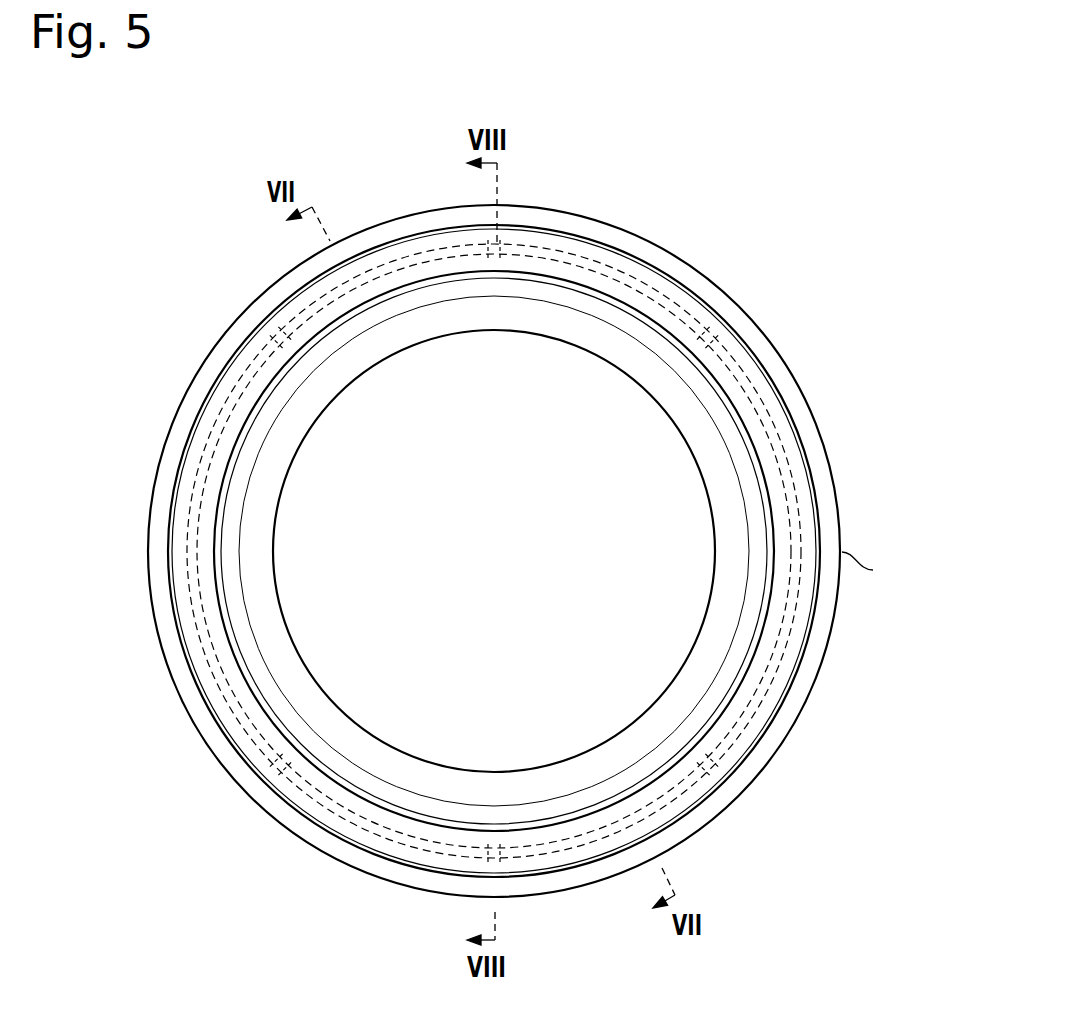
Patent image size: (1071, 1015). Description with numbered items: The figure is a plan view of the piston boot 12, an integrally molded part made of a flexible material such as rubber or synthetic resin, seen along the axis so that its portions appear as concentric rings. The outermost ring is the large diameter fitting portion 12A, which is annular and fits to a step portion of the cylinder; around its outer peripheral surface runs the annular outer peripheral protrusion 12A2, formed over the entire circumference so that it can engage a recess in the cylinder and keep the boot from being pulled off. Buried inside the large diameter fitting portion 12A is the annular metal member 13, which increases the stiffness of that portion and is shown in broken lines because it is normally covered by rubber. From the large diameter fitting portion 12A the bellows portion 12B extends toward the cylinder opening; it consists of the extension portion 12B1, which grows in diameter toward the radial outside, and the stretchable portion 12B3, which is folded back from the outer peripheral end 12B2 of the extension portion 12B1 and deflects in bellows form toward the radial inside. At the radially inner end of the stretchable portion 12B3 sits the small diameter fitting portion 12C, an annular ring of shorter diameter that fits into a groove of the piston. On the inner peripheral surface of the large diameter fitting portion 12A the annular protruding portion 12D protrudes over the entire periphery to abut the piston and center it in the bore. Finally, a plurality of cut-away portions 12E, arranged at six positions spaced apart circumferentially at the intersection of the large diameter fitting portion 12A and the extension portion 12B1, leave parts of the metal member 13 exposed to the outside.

The piston boot 12 is at (808, 713).
The large diameter fitting portion 12A is at (630, 270).
The outer peripheral protrusion 12A2 is at (773, 387).
The bellows portion 12B is at (190, 412).
The extension portion 12B1 is at (193, 695).
The outer peripheral end 12B2 is at (892, 568).
The stretchable portion 12B3 is at (745, 642).
The small diameter fitting portion 12C is at (698, 427).
The annular protruding portion 12D is at (250, 410).
The cut-away portions 12E is at (718, 328).
The metal member 13 is at (187, 575).